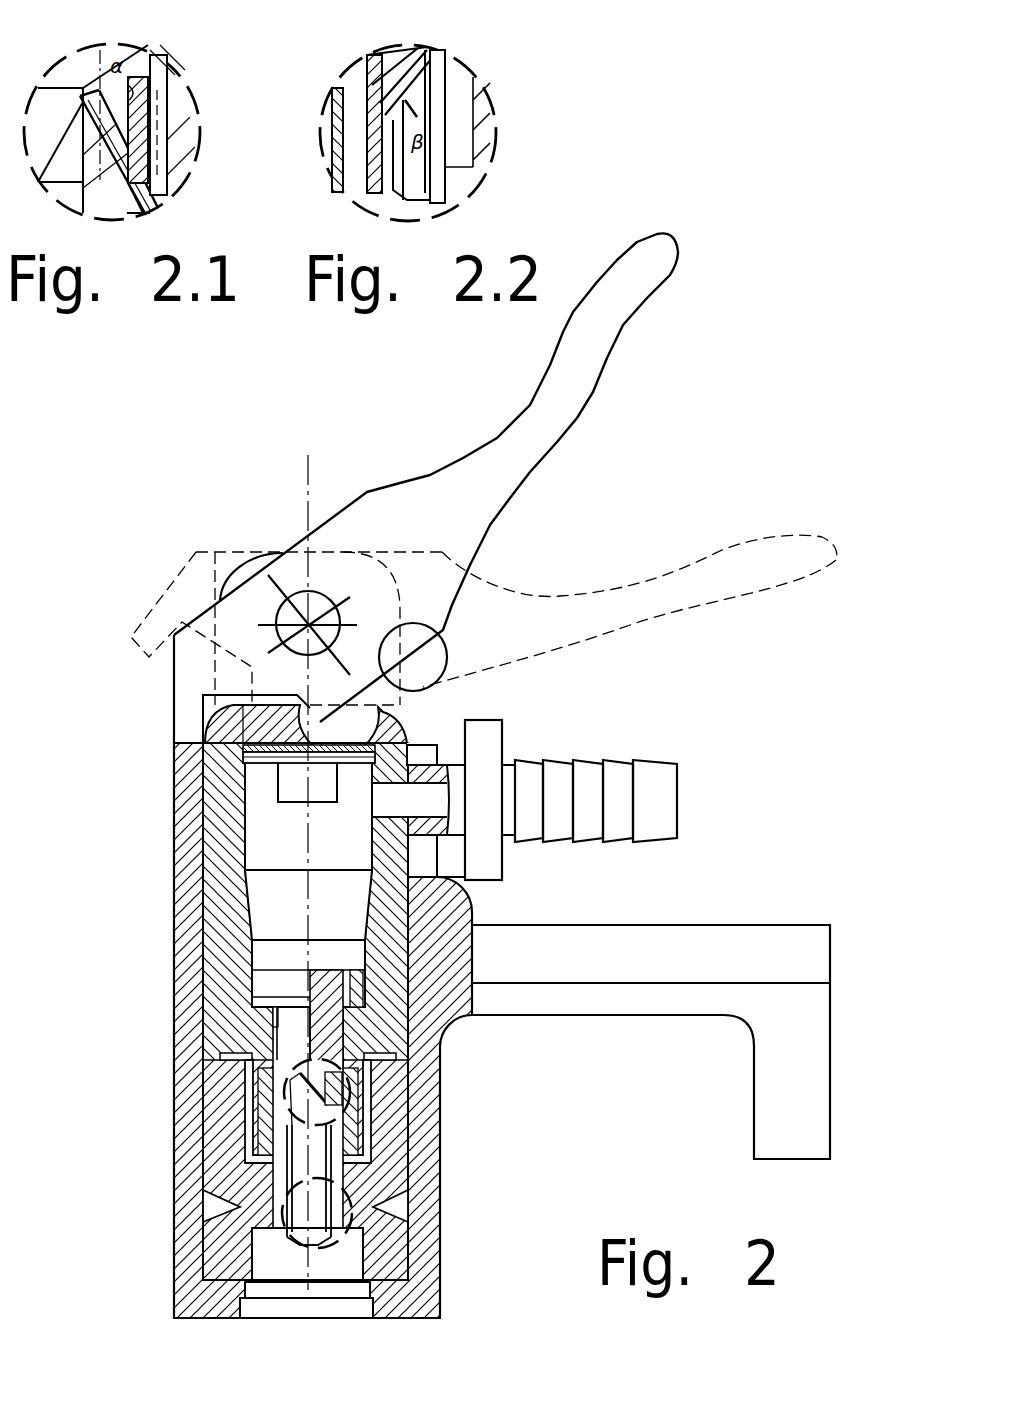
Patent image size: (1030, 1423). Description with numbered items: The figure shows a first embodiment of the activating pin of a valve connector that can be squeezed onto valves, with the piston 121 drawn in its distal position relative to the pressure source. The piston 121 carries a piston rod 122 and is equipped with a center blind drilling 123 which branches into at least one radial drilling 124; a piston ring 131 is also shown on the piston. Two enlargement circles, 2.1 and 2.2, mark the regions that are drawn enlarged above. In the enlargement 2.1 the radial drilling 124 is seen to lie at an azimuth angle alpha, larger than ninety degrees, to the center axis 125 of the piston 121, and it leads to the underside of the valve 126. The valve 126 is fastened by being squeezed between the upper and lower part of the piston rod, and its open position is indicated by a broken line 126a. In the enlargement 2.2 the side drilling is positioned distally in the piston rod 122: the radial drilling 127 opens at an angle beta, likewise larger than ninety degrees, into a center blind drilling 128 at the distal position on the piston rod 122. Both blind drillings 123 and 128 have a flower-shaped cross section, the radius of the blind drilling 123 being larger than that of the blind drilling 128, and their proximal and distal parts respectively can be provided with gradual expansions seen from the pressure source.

In FIG. 2, the piston 121 is at (330, 980).
In FIG. 2, the piston rod 122 is at (320, 1155).
In FIG. 2, the center blind drilling 123 is at (310, 987).
In FIG. 2, the radial drilling 124 is at (300, 1100).
In FIG. 2.1, the radial drilling 124 is at (100, 100).
In FIG. 2, the center axis 125 is at (307, 855).
In FIG. 2.1, the valve 126 is at (140, 110).
In FIG. 2.1, the broken line 126a is at (157, 172).
In FIG. 2.2, the radial drilling 127 is at (422, 72).
In FIG. 2, the center blind drilling 128 is at (310, 1243).
In FIG. 2.2, the center blind drilling 128 is at (407, 160).
In FIG. 2, the piston ring 131 is at (360, 980).
In FIG. 2, the detail circle 2.1 is at (350, 1087).
In FIG. 2, the detail circle 2.2 is at (352, 1208).